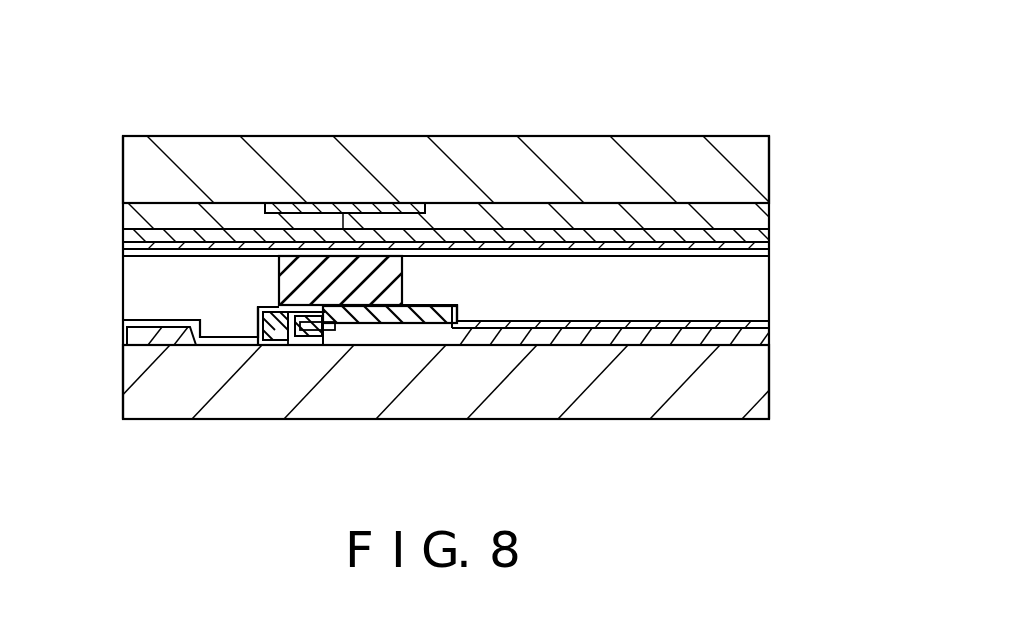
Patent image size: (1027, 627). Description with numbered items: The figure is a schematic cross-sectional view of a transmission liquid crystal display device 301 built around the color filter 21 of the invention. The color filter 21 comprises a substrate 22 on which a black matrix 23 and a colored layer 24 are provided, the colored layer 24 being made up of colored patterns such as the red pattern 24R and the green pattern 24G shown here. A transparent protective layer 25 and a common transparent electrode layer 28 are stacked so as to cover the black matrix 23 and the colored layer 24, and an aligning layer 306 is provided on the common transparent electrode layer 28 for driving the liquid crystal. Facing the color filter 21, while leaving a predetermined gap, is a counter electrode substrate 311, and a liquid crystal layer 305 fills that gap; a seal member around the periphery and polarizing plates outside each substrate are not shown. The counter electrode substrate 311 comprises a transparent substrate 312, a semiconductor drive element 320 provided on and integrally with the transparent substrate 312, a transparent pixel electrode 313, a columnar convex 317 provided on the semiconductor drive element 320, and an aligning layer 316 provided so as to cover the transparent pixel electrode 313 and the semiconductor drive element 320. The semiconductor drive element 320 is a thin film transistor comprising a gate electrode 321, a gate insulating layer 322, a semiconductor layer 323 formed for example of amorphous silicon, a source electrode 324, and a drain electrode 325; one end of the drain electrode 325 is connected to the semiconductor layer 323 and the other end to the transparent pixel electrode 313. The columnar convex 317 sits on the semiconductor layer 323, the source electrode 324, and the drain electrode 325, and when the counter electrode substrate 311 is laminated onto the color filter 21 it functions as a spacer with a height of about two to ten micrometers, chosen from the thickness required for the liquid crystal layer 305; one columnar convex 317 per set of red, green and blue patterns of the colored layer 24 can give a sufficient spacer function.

The liquid crystal display device 301 is at (585, 96).
The color filter 21 is at (786, 141).
The substrate 22 is at (760, 173).
The black matrix 23 is at (325, 208).
The colored layer 24 is at (781, 213).
The green pattern 24G is at (172, 210).
The red pattern 24R is at (647, 210).
The transparent protective layer 25 is at (760, 235).
The common transparent electrode layer 28 is at (763, 248).
The aligning layer 306 is at (772, 262).
The liquid crystal layer 305 is at (217, 302).
The columnar convex 317 is at (400, 265).
The counter electrode substrate 311 is at (735, 438).
The transparent substrate 312 is at (750, 387).
The transparent pixel electrode 313 is at (755, 331).
The aligning layer 316 is at (765, 318).
The semiconductor drive element 320 is at (371, 356).
The gate electrode 321 is at (305, 336).
The gate insulating layer 322 is at (395, 332).
The semiconductor layer 323 is at (285, 332).
The source electrode 324 is at (272, 336).
The drain electrode 325 is at (430, 326).